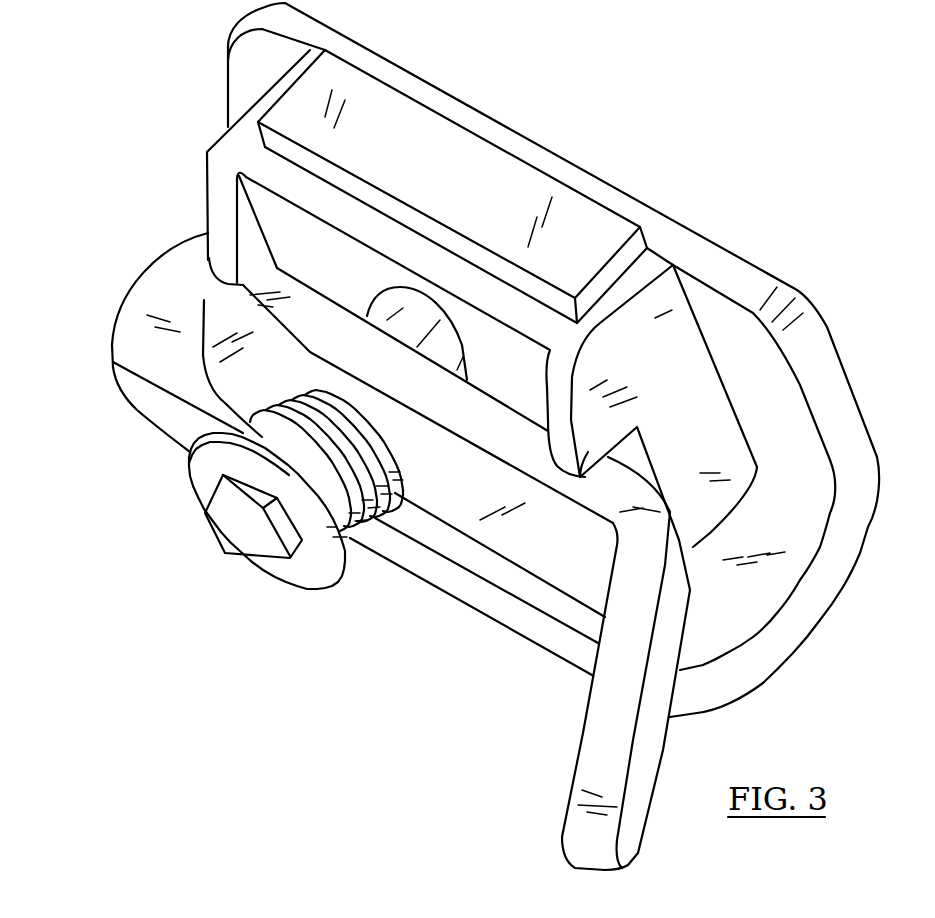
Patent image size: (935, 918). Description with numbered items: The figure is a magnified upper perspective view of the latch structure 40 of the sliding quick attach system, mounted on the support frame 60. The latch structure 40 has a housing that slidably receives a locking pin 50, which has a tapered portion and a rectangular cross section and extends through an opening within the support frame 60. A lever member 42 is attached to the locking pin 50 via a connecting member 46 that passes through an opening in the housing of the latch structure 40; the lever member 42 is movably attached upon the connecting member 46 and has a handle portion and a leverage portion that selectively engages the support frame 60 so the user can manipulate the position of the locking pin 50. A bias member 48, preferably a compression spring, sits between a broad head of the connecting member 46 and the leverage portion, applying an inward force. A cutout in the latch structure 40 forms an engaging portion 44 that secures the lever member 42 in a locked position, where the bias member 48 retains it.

The latch structure 40 is at (713, 612).
The lever member 42 is at (602, 747).
The engaging portion 44 is at (598, 470).
The connecting member 46 is at (310, 575).
The bias member 48 is at (385, 555).
The locking pin 50 is at (612, 226).
The support frame 60 is at (150, 407).